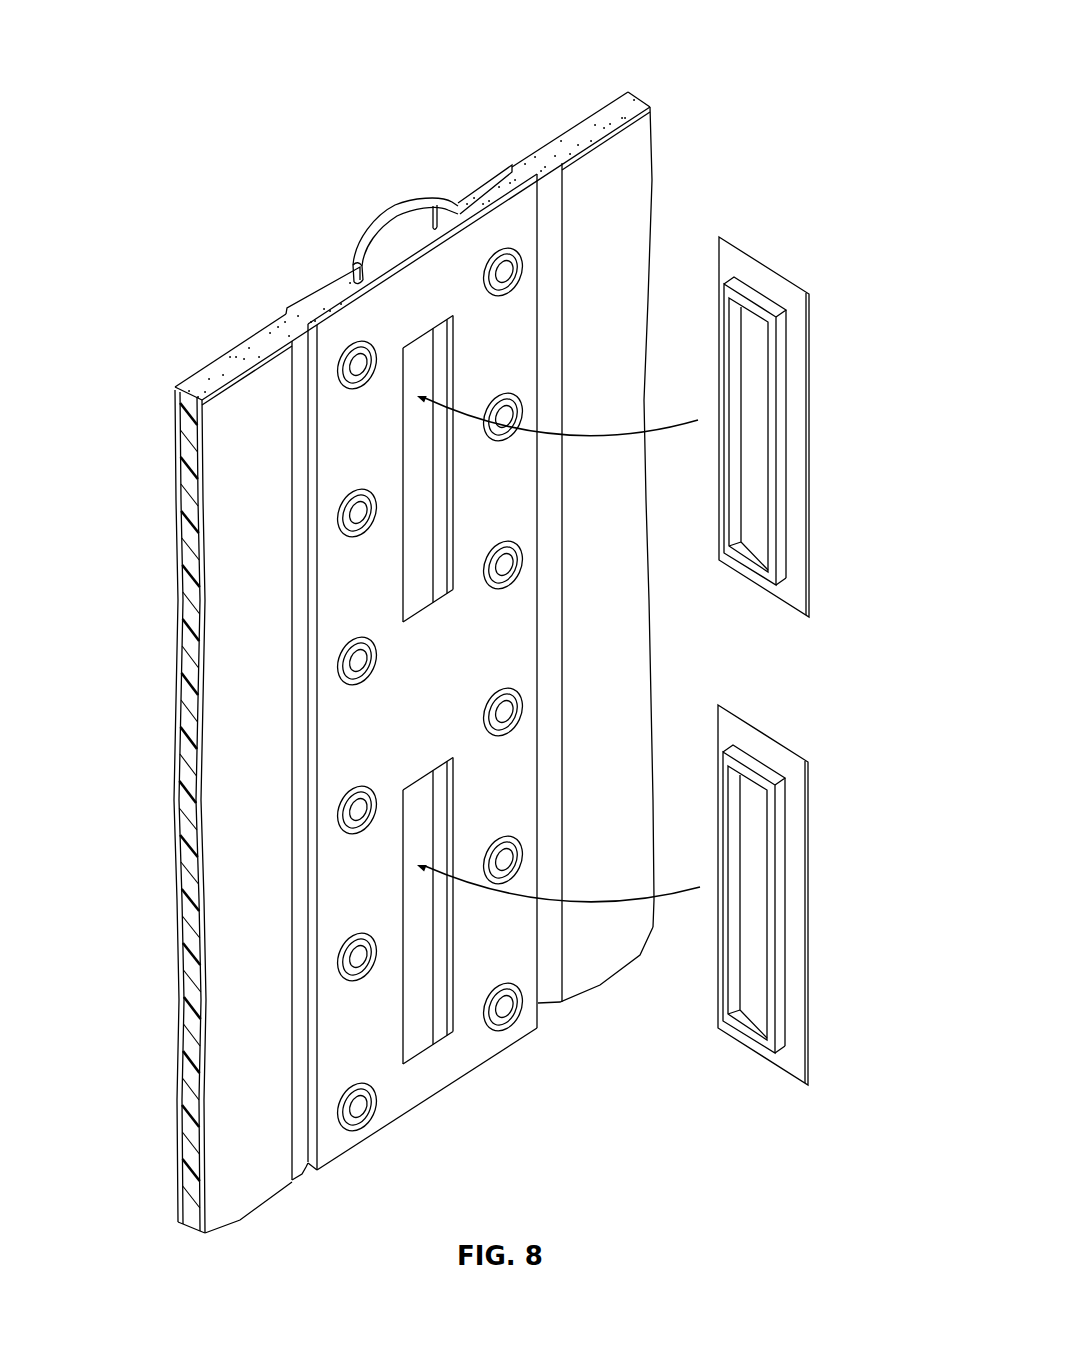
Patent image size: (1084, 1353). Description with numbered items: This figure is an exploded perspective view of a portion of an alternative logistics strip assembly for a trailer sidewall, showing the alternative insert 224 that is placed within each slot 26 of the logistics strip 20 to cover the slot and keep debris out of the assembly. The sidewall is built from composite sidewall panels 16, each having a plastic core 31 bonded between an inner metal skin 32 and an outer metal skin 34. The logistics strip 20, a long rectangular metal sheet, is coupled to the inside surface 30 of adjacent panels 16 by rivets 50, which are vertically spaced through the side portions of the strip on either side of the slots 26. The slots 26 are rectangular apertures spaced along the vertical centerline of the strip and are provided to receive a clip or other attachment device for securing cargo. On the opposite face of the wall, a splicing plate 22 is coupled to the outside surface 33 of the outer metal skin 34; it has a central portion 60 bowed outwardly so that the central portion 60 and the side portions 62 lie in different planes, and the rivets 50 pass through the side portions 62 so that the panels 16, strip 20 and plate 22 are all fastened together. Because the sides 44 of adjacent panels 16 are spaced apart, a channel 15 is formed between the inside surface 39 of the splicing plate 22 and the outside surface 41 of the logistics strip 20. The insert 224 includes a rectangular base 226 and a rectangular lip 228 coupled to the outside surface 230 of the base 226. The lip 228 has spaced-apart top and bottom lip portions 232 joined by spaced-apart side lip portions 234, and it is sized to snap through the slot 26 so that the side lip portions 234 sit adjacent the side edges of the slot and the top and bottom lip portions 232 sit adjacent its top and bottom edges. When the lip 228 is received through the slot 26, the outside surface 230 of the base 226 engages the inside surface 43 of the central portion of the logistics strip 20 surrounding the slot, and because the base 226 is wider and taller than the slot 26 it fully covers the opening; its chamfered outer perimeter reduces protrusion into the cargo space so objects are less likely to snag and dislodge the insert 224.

The channel 15 is at (387, 246).
The sidewall panel 16 is at (175, 644).
The logistics strip 20 is at (318, 515).
The splicing plate 22 is at (450, 190).
The slot 26 is at (440, 490).
The inside surface 30 is at (598, 222).
The plastic core 31 is at (630, 94).
The inner metal skin 32 is at (630, 248).
The outside surface 33 is at (178, 430).
The outer metal skin 34 is at (597, 103).
The inside surface of the splicing plate 39 is at (398, 230).
The outside surface of the logistics strip 41 is at (440, 229).
The inside surface of the central portion 43 is at (430, 672).
The side 44 is at (363, 272).
The rivet 50 is at (357, 665).
The central portion 60 is at (388, 208).
The side portion 62 is at (300, 297).
The insert 224 is at (822, 377).
The rectangular base 226 is at (795, 450).
The rectangular lip 228 is at (783, 542).
The outside surface 230 is at (762, 278).
The top and bottom lip portions 232 is at (764, 302).
The side lip portions 234 is at (780, 405).